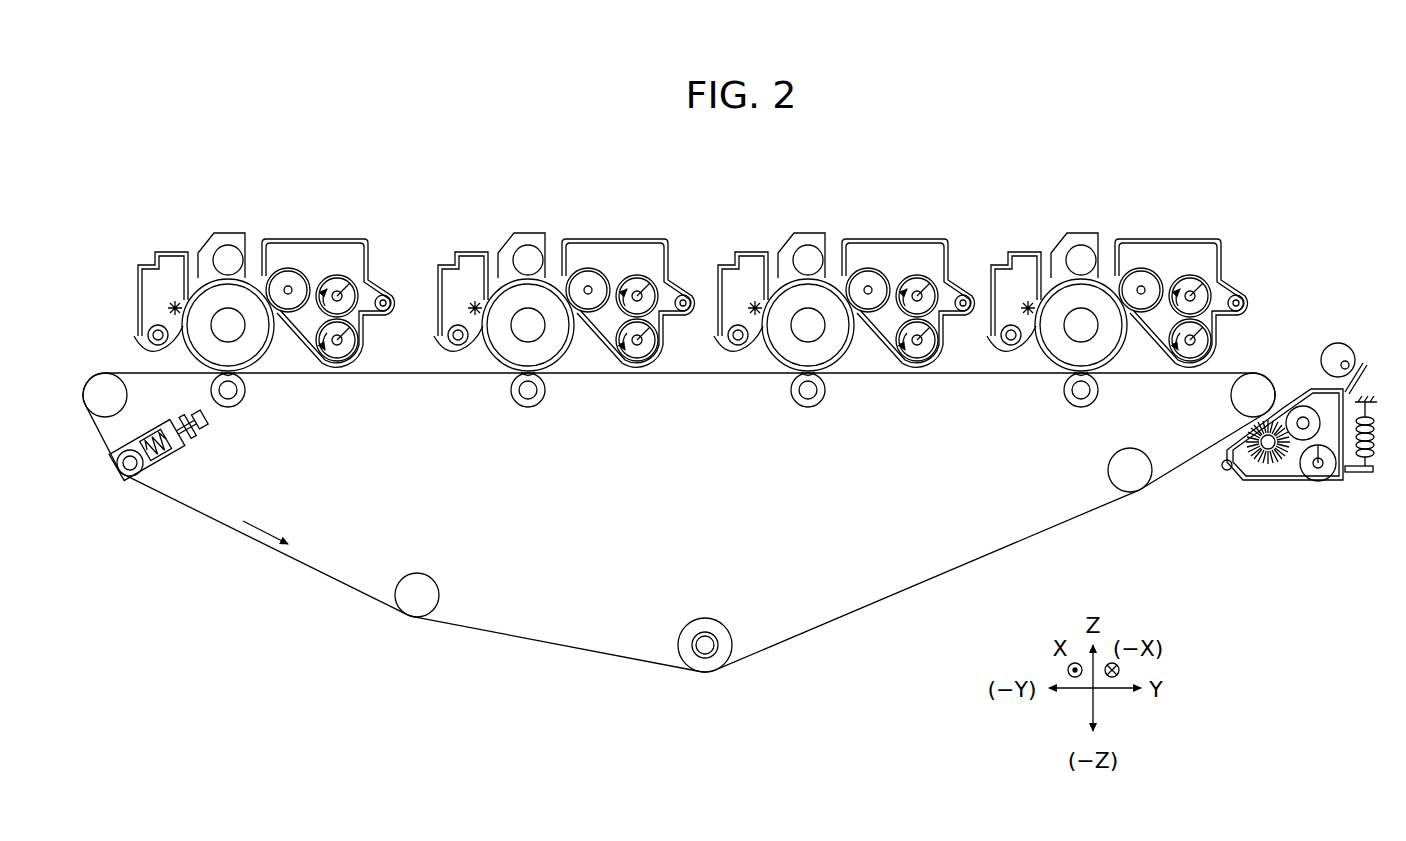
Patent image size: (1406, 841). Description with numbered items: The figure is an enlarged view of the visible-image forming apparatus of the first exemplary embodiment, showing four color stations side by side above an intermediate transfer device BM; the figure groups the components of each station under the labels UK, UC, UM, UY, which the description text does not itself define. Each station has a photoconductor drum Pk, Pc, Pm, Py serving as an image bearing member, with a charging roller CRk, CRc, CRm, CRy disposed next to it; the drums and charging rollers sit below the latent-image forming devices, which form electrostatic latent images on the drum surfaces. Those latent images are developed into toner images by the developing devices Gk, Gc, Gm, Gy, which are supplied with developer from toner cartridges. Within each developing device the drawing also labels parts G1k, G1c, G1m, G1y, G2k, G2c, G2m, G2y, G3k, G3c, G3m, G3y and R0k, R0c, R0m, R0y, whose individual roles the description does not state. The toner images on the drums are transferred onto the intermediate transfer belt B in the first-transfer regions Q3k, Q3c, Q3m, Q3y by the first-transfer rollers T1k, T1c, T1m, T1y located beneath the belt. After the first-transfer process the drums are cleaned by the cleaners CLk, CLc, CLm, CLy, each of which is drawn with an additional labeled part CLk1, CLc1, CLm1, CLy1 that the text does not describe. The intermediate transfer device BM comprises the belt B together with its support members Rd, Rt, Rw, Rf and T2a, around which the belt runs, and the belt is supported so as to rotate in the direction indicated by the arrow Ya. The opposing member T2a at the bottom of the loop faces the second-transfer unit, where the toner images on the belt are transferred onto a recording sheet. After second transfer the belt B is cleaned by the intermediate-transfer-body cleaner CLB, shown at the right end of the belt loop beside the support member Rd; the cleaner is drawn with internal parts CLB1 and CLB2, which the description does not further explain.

The image forming unit (black) UK is at (197, 236).
The image forming unit (cyan) UC is at (506, 227).
The image forming unit (magenta) UM is at (785, 227).
The image forming unit (yellow) UY is at (1059, 227).
The photoconductor drum Pk is at (252, 333).
The photoconductor drum Pc is at (542, 325).
The photoconductor drum Pm is at (824, 325).
The photoconductor drum Py is at (1095, 325).
The charging roller CRk is at (231, 260).
The charging roller CRc is at (539, 233).
The charging roller CRm is at (822, 233).
The charging roller CRy is at (1092, 233).
The cleaner CLk is at (176, 241).
The cleaner CLc is at (459, 275).
The cleaner CLm is at (736, 275).
The cleaner CLy is at (1012, 275).
The cleaning roller (black) CLk1 is at (148, 338).
The cleaning roller (cyan) CLc1 is at (475, 371).
The cleaning roller (magenta) CLm1 is at (754, 371).
The cleaning roller (yellow) CLy1 is at (1027, 371).
The developing device Gk is at (340, 304).
The developing device Gc is at (640, 304).
The developing device Gm is at (922, 304).
The developing device Gy is at (1221, 279).
The developer container (black) G1k is at (353, 250).
The developer container (cyan) G1c is at (628, 279).
The developer container (magenta) G1m is at (908, 279).
The developer container (yellow) G1y is at (1181, 279).
The developer agitating member (black) G2k is at (390, 296).
The developer agitating member (cyan) G2c is at (697, 276).
The developer agitating member (magenta) G2m is at (977, 276).
The developer agitating member (yellow) G2y is at (1250, 276).
The developer conveying screw (black) G3k is at (367, 356).
The developer conveying screw (cyan) G3c is at (661, 340).
The developer conveying screw (magenta) G3m is at (943, 340).
The developer conveying screw (yellow) G3y is at (1248, 333).
The developing roller (black) R0k is at (290, 287).
The developing roller (cyan) R0c is at (602, 279).
The developing roller (magenta) R0m is at (884, 279).
The developing roller (yellow) R0y is at (1155, 279).
The first-transfer region Q3k is at (243, 380).
The first-transfer region Q3c is at (563, 395).
The first-transfer region Q3m is at (845, 395).
The first-transfer region Q3y is at (1116, 395).
The first-transfer roller T1k is at (232, 406).
The first-transfer roller T1c is at (534, 421).
The first-transfer roller T1m is at (815, 421).
The first-transfer roller T1y is at (1087, 421).
The intermediate transfer device BM is at (679, 522).
The intermediate transfer belt B is at (1019, 540).
The support member Rf is at (113, 395).
The support member Rt is at (120, 484).
The support member Rw is at (424, 587).
The support member Rd is at (1240, 402).
The opposing member T2a is at (690, 632).
The arrow Ya is at (265, 523).
The intermediate-transfer-body cleaner CLB is at (1307, 458).
The belt cleaning roller CLB1 is at (1320, 482).
The belt cleaning brush CLB2 is at (1337, 486).